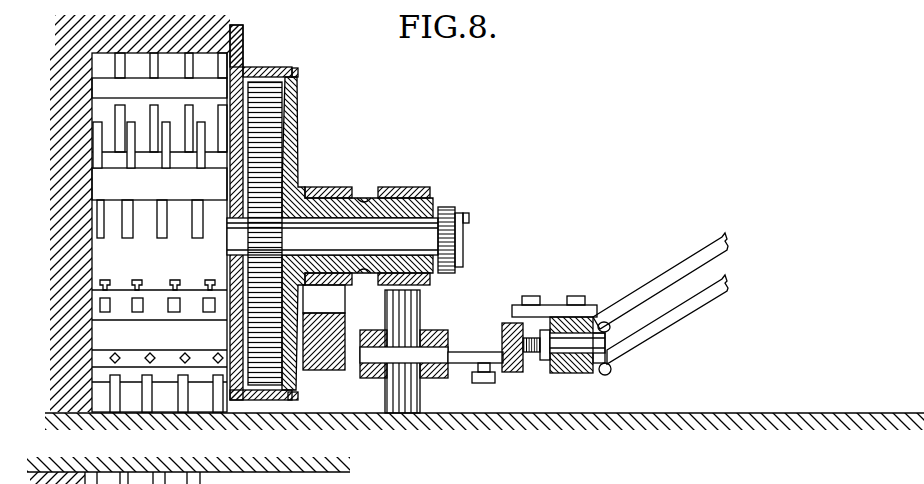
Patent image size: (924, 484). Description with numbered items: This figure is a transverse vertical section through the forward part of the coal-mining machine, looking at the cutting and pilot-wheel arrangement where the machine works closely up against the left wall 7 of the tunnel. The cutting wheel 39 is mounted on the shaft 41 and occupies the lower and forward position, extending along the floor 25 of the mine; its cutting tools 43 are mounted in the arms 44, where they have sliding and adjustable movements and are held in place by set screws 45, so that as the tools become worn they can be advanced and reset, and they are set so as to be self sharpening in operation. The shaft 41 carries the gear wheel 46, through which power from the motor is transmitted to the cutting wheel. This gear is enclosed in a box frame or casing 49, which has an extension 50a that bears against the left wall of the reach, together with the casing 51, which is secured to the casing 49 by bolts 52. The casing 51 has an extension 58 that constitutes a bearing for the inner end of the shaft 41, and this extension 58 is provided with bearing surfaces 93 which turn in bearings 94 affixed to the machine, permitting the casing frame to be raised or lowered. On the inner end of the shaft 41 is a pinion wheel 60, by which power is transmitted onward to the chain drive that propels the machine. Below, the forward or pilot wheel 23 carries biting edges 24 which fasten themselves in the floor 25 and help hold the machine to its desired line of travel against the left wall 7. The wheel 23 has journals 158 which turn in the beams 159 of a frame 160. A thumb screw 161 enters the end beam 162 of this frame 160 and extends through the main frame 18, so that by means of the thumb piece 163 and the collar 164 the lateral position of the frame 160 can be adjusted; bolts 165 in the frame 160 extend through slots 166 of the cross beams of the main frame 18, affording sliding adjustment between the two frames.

The left wall 7 is at (72, 348).
The main frame 18 is at (592, 390).
The forward wheel 23 is at (422, 396).
The biting edges 24 is at (408, 416).
The floor 25 is at (525, 414).
The cutting wheel 39 is at (200, 258).
The shaft 41 is at (332, 236).
The cutting tools 43 is at (118, 65).
The arms 44 is at (107, 91).
The set screws 45 is at (100, 282).
The gear wheel 46 is at (263, 168).
The box frame or casing 49 is at (270, 69).
The extension 50a is at (243, 37).
The casing 51 is at (293, 133).
The bolts 52 is at (297, 73).
The extension 58 is at (441, 200).
The pinion wheel 60 is at (460, 211).
The bearing surfaces 93 is at (336, 187).
The bearings 94 is at (344, 187).
The journals 158 is at (366, 362).
The beams 159 is at (372, 330).
The frame 160 is at (459, 363).
The thumb screw 161 is at (543, 330).
The end beam 162 is at (521, 300).
The thumb piece 163 is at (620, 326).
The collar 164 is at (553, 335).
The bolts 165 is at (526, 356).
The slots 166 is at (500, 347).